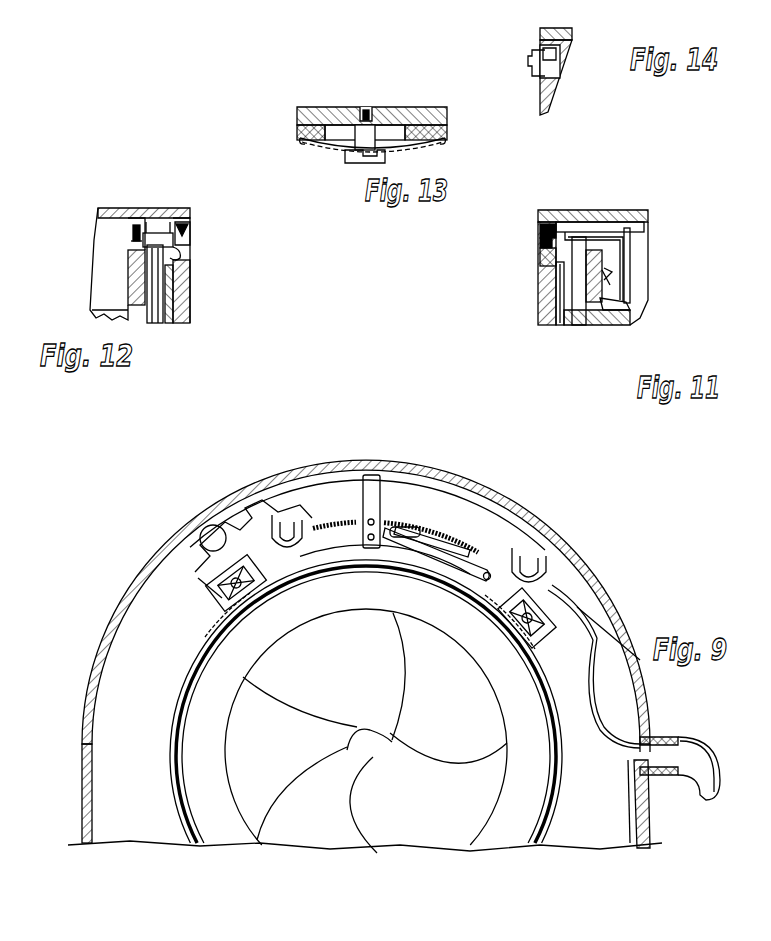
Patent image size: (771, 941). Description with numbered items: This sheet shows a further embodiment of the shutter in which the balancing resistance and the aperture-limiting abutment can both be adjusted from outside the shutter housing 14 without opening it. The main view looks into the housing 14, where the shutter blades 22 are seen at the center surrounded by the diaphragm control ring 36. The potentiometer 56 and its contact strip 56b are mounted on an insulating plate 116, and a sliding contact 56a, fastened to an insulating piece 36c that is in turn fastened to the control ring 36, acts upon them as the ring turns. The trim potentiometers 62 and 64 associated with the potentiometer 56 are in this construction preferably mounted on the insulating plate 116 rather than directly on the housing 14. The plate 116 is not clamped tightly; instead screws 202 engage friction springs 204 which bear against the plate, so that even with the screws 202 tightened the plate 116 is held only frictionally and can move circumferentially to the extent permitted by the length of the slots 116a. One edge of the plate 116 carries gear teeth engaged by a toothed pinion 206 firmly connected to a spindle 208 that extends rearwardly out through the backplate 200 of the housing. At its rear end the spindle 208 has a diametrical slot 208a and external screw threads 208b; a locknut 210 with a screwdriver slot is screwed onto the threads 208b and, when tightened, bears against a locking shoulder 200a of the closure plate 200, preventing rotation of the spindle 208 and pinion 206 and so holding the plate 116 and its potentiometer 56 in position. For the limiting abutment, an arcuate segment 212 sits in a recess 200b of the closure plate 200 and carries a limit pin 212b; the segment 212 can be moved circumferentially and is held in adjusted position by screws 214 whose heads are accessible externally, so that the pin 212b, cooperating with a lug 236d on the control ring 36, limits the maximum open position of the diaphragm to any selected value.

In FIG. 12, the shutter housing 14 is at (103, 207).
In FIG. 13, the shutter housing 14 is at (404, 110).
In FIG. 14, the shutter housing 14 is at (560, 34).
In FIG. 11, the shutter housing 14 is at (637, 210).
In FIG. 9, the shutter housing 14 is at (83, 763).
In FIG. 9, the shutter blades 22 is at (388, 782).
In FIG. 12, the diaphragm control ring 36 is at (170, 323).
In FIG. 11, the diaphragm control ring 36 is at (560, 325).
In FIG. 11, the insulating piece 36c is at (630, 250).
In FIG. 9, the insulating piece 36c is at (363, 490).
In FIG. 11, the potentiometer 56 is at (606, 240).
In FIG. 9, the potentiometer 56 is at (330, 513).
In FIG. 11, the sliding contact 56a is at (612, 276).
In FIG. 9, the sliding contact 56a is at (405, 538).
In FIG. 11, the contact strip 56b is at (628, 308).
In FIG. 9, the contact strip 56b is at (443, 552).
In FIG. 9, the trim potentiometer 62 is at (530, 547).
In FIG. 9, the trim potentiometer 64 is at (270, 518).
In FIG. 12, the insulating plate 116 is at (128, 285).
In FIG. 13, the insulating plate 116 is at (299, 132).
In FIG. 11, the insulating plate 116 is at (596, 327).
In FIG. 9, the insulating plate 116 is at (192, 578).
In FIG. 13, the slots 116a is at (340, 130).
In FIG. 9, the slots 116a is at (227, 603).
In FIG. 12, the backplate 200 is at (182, 305).
In FIG. 14, the backplate 200 is at (556, 92).
In FIG. 11, the backplate 200 is at (540, 310).
In FIG. 12, the locking shoulder 200a is at (175, 262).
In FIG. 11, the recess 200b is at (549, 222).
In FIG. 13, the screws 202 is at (350, 160).
In FIG. 9, the screws 202 is at (227, 573).
In FIG. 13, the friction springs 204 is at (325, 150).
In FIG. 9, the friction springs 204 is at (278, 588).
In FIG. 12, the toothed pinion 206 is at (133, 236).
In FIG. 9, the toothed pinion 206 is at (213, 524).
In FIG. 12, the spindle 208 is at (148, 232).
In FIG. 12, the diametrical slot 208a is at (192, 236).
In FIG. 12, the external screw threads 208b is at (186, 226).
In FIG. 12, the locknut 210 is at (180, 252).
In FIG. 14, the arcuate segment 212 is at (540, 48).
In FIG. 11, the arcuate segment 212 is at (540, 228).
In FIG. 11, the limit pin 212b is at (540, 240).
In FIG. 14, the screws 214 is at (530, 67).
In FIG. 11, the lug 236d is at (540, 262).